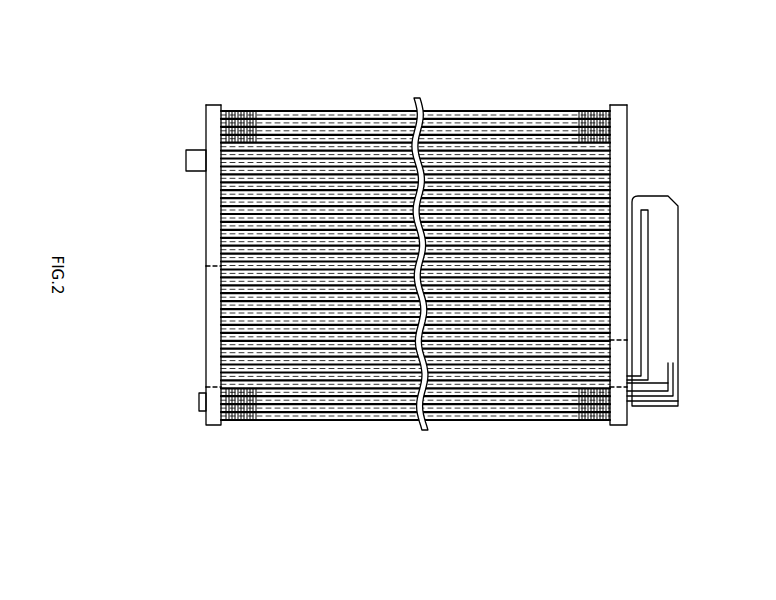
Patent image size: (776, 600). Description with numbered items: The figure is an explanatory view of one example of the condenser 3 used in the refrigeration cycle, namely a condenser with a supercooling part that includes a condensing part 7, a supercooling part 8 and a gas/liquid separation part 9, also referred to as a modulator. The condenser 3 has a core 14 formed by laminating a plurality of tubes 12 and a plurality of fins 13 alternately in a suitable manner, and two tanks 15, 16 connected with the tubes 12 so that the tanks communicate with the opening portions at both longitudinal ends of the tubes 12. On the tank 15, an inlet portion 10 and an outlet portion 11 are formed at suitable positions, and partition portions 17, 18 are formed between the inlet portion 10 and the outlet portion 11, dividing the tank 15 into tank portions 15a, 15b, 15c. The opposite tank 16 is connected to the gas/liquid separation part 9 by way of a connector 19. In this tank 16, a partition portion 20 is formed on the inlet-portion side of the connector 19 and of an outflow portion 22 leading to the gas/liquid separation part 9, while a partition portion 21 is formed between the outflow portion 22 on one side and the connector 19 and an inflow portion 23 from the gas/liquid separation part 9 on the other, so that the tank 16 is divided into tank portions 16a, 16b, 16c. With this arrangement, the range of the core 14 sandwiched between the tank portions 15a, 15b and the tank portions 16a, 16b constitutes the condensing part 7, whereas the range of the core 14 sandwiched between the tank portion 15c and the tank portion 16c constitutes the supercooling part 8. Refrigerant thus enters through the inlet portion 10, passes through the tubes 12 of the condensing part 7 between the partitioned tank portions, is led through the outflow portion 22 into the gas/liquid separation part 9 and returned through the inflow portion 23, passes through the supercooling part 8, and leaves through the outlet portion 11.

The condenser 3 is at (622, 108).
The condensing part 7 is at (492, 160).
The supercooling part 8 is at (489, 396).
The gas/liquid separation part 9 is at (670, 236).
The inlet portion 10 is at (178, 151).
The outlet portion 11 is at (191, 393).
The tubes 12 is at (308, 104).
The fins 13 is at (249, 106).
The core 14 is at (383, 100).
The tank 15 is at (187, 287).
The tank portion 15a is at (202, 207).
The tank portion 15b is at (198, 312).
The tank portion 15c is at (207, 418).
The tank 16 is at (681, 287).
The tank portion 16a is at (612, 128).
The tank portion 16b is at (610, 342).
The tank portion 16c is at (612, 418).
The partition portion 17 is at (200, 262).
The partition portion 18 is at (200, 377).
The connector 19 is at (670, 378).
The partition portion 20 is at (637, 313).
The partition portion 21 is at (655, 348).
The outflow portion 22 is at (642, 370).
The inflow portion 23 is at (645, 390).